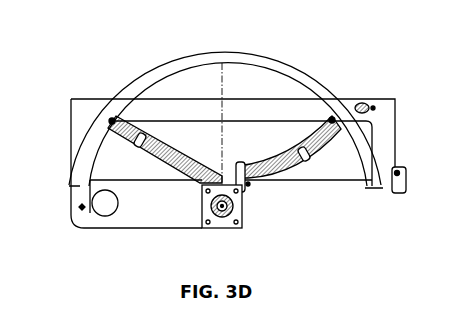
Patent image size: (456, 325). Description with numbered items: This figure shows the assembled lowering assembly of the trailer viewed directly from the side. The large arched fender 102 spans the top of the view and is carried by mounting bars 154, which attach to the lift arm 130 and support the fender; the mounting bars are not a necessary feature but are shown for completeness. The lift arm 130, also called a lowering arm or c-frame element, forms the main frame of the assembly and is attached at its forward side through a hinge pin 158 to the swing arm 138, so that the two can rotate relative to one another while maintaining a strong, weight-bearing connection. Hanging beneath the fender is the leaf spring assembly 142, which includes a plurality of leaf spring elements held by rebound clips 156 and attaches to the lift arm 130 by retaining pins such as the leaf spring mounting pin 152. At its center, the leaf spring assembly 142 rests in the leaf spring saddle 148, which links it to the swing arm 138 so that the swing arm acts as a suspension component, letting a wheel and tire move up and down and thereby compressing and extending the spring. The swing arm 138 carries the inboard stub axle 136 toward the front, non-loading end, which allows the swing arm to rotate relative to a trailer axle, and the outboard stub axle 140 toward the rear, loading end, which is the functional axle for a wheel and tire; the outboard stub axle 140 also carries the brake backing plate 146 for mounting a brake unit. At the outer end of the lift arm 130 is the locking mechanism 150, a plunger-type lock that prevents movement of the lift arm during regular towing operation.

The fender 102 is at (137, 78).
The lift arm 130 is at (85, 107).
The inboard stub axle 136 is at (105, 206).
The swing arm 138 is at (132, 207).
The outboard stub axle 140 is at (219, 225).
The leaf spring assembly 142 is at (278, 183).
The brake backing plate 146 is at (214, 212).
The leaf spring saddle 148 is at (258, 184).
The locking mechanism 150 is at (404, 176).
The leaf spring mounting pin 152 is at (363, 102).
The mounting bars 154 is at (112, 118).
The rebound clips 156 is at (137, 142).
The hinge pin 158 is at (76, 219).